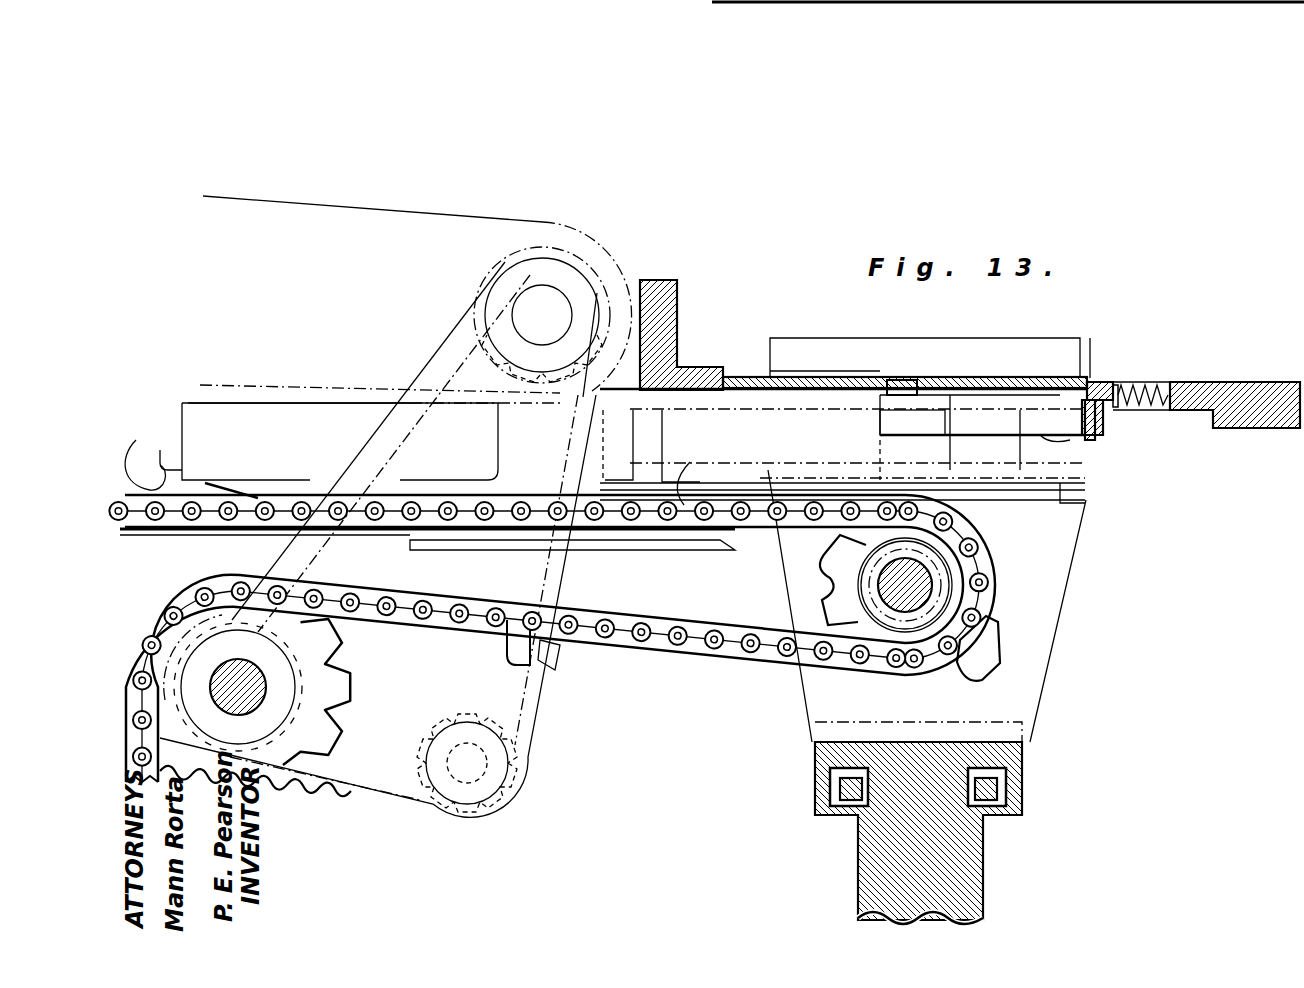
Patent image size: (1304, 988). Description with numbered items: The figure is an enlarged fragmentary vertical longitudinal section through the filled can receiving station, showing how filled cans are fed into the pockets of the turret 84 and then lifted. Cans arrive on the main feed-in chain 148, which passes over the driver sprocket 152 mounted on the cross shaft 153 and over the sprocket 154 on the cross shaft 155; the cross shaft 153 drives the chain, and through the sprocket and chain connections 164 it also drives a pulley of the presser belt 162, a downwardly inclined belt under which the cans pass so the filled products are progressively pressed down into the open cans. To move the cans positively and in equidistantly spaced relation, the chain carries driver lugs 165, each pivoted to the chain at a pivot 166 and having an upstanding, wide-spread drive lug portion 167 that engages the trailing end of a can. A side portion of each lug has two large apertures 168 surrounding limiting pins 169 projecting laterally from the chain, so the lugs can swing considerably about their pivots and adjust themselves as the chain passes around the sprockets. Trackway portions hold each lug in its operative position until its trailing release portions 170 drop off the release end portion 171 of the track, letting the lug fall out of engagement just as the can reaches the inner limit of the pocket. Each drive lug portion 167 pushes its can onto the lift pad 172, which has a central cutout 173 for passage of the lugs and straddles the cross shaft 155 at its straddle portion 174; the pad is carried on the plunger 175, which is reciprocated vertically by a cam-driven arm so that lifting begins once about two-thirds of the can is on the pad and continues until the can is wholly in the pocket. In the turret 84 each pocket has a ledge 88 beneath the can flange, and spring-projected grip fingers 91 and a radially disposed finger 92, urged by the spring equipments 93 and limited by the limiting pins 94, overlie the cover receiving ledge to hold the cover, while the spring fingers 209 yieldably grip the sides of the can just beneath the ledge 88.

The turret 84 is at (1255, 371).
The ledge 88 is at (1070, 440).
The grip fingers 91 is at (905, 380).
The finger 92 is at (1100, 384).
The spring equipments 93 is at (1145, 385).
The limiting pins 94 is at (1116, 407).
The main feed-in chain 148 is at (722, 664).
The driver sprocket 152 is at (366, 652).
The cross shaft 153 is at (262, 692).
The sprocket 154 is at (955, 592).
The cross shaft 155 is at (935, 580).
The presser belt 162 is at (509, 222).
The sprocket and chain connections 164 is at (478, 347).
The driver lugs 165 is at (150, 406).
The pivot 166 is at (237, 505).
The drive lug portion 167 is at (558, 668).
The apertures 168 is at (245, 497).
The limiting pins 169 is at (195, 520).
The release portions 170 is at (138, 530).
The release end portion 171 is at (735, 552).
The lift pad 172 is at (835, 470).
The central cutout 173 is at (1085, 495).
The straddle portion 174 is at (905, 672).
The plunger 175 is at (950, 868).
The spring fingers 209 is at (882, 420).